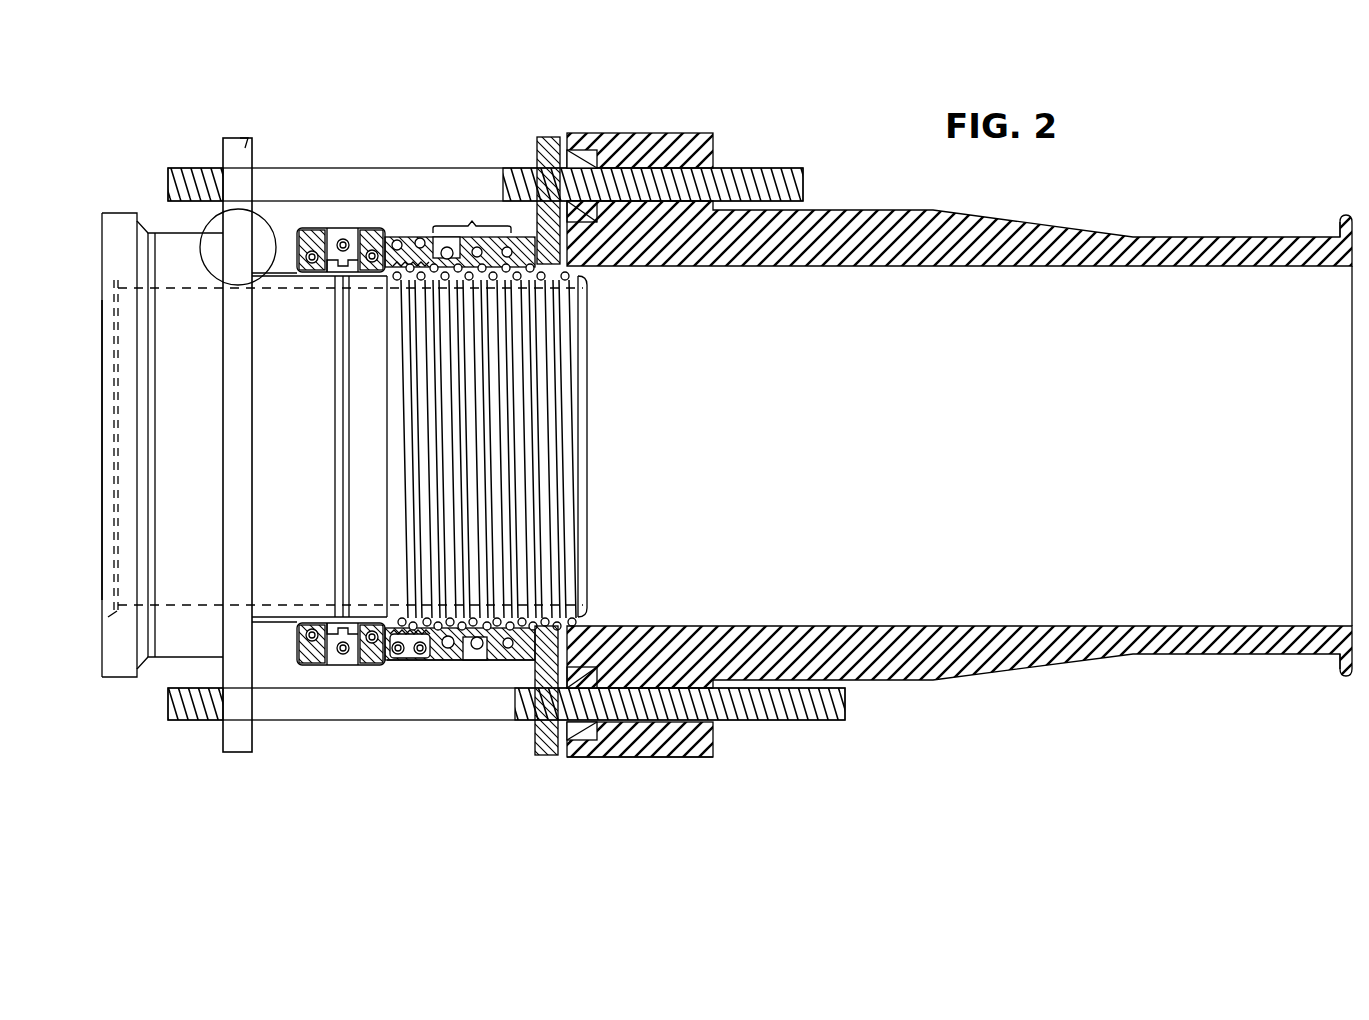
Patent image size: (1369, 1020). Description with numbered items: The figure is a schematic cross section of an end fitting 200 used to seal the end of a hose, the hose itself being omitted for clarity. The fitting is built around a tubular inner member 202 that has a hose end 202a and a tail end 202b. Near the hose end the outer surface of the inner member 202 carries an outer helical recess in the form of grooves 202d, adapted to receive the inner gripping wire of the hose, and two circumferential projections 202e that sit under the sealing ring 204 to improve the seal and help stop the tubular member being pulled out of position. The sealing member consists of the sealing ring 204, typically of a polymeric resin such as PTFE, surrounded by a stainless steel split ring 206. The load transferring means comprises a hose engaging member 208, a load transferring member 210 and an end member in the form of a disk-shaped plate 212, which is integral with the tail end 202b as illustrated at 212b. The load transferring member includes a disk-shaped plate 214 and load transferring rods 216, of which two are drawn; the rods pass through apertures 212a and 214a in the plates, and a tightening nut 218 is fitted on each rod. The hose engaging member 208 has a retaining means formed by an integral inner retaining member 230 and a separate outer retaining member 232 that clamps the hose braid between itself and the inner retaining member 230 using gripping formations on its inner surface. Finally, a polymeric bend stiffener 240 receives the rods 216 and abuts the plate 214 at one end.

The end fitting 200 is at (455, 92).
The tubular inner member 202 is at (128, 212).
The hose end 202a is at (580, 373).
The tail end 202b is at (100, 425).
The grooves 202d is at (565, 266).
The circumferential projections 202e is at (227, 273).
The sealing ring 204 is at (330, 228).
The split ring 206 is at (368, 228).
The hose engaging member 208 is at (472, 216).
The load transferring member 210 is at (553, 127).
The disk-shaped plate 212 is at (229, 137).
The apertures 212a is at (256, 149).
The integral connection 212b is at (248, 126).
The disk-shaped plate 214 is at (625, 133).
The apertures 214a is at (520, 700).
The load transferring rod 216 is at (397, 692).
The tightening nut 218 is at (580, 758).
The inner retaining member 230 is at (385, 272).
The outer retaining member 232 is at (400, 666).
The bend stiffener 240 is at (1170, 267).